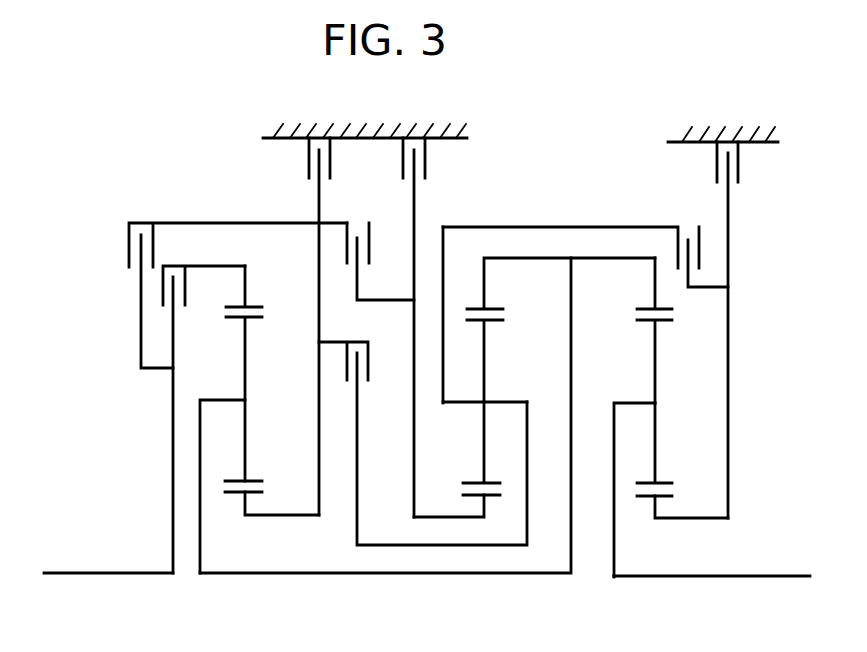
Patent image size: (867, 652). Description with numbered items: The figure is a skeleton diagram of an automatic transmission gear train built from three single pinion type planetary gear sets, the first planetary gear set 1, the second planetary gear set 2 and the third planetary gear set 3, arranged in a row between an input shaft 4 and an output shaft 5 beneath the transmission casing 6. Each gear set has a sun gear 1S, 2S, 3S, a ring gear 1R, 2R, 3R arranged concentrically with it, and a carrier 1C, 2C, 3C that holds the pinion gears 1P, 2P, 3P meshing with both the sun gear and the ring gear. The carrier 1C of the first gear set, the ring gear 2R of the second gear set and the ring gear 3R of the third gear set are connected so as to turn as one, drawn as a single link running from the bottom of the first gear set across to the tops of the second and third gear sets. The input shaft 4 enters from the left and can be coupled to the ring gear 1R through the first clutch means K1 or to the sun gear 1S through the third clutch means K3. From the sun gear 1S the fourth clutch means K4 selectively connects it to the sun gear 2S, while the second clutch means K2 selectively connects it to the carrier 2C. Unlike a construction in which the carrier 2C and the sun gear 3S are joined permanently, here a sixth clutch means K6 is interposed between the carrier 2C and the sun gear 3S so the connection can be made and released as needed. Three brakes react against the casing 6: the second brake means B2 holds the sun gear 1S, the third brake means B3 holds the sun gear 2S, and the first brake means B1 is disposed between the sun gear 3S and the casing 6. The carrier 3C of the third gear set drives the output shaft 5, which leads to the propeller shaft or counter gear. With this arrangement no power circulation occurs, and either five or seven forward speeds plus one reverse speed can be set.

The transmission casing 6 is at (388, 138).
The first brake means B1 is at (752, 330).
The second brake means B2 is at (298, 326).
The third brake means B3 is at (393, 327).
The first clutch means K1 is at (204, 405).
The second clutch means K2 is at (423, 429).
The third clutch means K3 is at (238, 281).
The fourth clutch means K4 is at (379, 246).
The sixth clutch means K6 is at (585, 242).
The first planetary gear set 1 is at (251, 540).
The second planetary gear set 2 is at (483, 527).
The third planetary gear set 3 is at (643, 548).
The ring gear 1R is at (253, 307).
The carrier 1C is at (220, 400).
The pinion gear 1P is at (252, 481).
The sun gear 1S is at (258, 492).
The ring gear 2R is at (497, 308).
The carrier 2C is at (500, 402).
The pinion gear 2P is at (486, 482).
The sun gear 2S is at (484, 498).
The ring gear 3R is at (646, 308).
The carrier 3C is at (628, 403).
The pinion gear 3P is at (660, 322).
The sun gear 3S is at (663, 497).
The input shaft 4 is at (102, 573).
The output shaft 5 is at (754, 576).